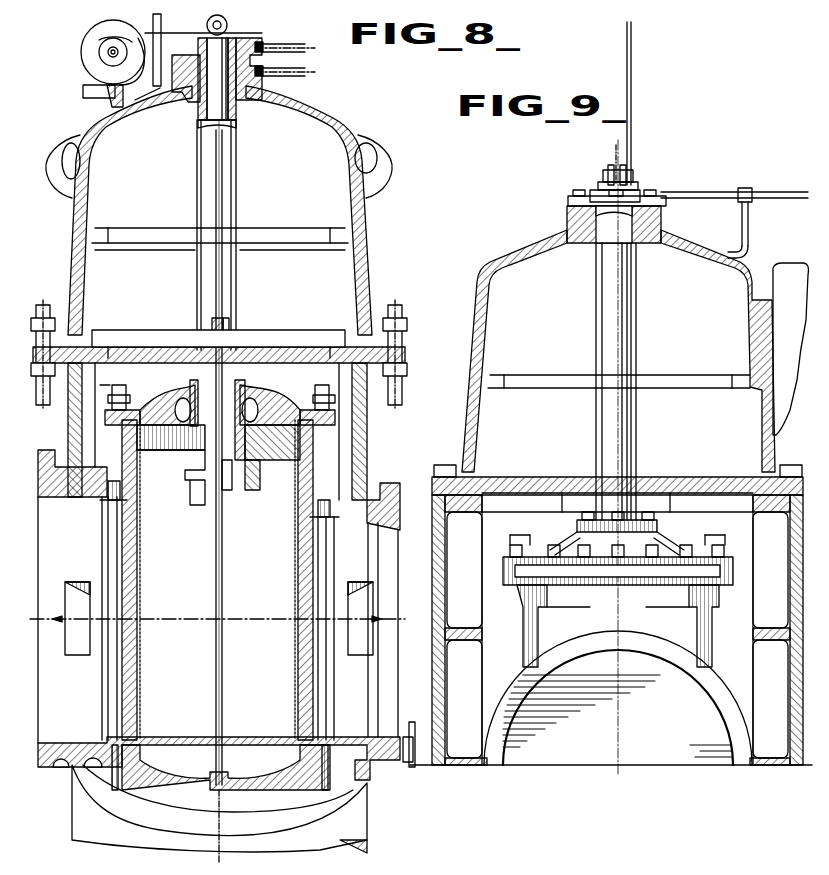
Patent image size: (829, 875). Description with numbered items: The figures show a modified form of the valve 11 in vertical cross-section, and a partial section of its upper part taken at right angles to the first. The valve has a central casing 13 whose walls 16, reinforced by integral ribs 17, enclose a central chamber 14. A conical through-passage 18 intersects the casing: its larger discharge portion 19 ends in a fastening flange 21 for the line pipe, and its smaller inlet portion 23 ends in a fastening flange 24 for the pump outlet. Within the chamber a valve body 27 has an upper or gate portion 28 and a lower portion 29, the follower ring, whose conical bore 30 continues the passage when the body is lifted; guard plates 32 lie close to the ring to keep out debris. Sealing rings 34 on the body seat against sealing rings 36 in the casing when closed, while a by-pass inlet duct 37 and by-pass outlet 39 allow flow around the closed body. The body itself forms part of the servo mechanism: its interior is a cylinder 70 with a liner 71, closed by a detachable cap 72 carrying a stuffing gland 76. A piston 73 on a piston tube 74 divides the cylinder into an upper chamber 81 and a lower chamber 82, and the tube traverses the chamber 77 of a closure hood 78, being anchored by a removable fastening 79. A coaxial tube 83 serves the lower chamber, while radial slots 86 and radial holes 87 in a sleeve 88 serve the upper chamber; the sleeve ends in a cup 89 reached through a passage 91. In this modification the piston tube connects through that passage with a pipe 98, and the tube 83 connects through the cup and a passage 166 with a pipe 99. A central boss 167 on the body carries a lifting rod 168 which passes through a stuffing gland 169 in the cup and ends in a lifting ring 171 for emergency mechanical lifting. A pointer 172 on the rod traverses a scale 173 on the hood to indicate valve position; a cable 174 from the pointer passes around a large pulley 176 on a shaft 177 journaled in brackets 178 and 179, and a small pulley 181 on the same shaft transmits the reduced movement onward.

In FIG. 8, the valve 11 is at (372, 437).
In FIG. 9, the valve 11 is at (768, 772).
In FIG. 8, the central casing 13 is at (368, 415).
In FIG. 9, the central casing 13 is at (455, 768).
In FIG. 8, the central chamber 14 is at (290, 375).
In FIG. 9, the central chamber 14 is at (530, 485).
In FIG. 8, the walls 16 is at (368, 458).
In FIG. 9, the walls 16 is at (452, 692).
In FIG. 8, the integral ribs 17 is at (368, 398).
In FIG. 9, the integral ribs 17 is at (470, 607).
In FIG. 8, the conical through-passage 18 is at (385, 532).
In FIG. 8, the discharge portion 19 is at (74, 713).
In FIG. 8, the fastening flange 21 is at (45, 450).
In FIG. 8, the inlet portion 23 is at (395, 730).
In FIG. 8, the fastening flange 24 is at (392, 760).
In FIG. 8, the valve body 27 is at (138, 670).
In FIG. 9, the valve body 27 is at (725, 622).
In FIG. 8, the upper portion 28 is at (125, 545).
In FIG. 9, the upper portion 28 is at (572, 770).
In FIG. 8, the lower portion 29 is at (168, 795).
In FIG. 8, the conical bore 30 is at (262, 798).
In FIG. 8, the guard plates 32 is at (115, 790).
In FIG. 8, the circular sealing rings 34 is at (138, 497).
In FIG. 9, the circular sealing rings 34 is at (495, 770).
In FIG. 8, the sealing rings 36 is at (110, 500).
In FIG. 8, the by-pass inlet duct 37 is at (358, 655).
In FIG. 8, the by-pass outlet 39 is at (70, 655).
In FIG. 8, the circular cylinder 70 is at (140, 535).
In FIG. 8, the liner 71 is at (140, 582).
In FIG. 8, the detachable cap 72 is at (135, 410).
In FIG. 9, the detachable cap 72 is at (735, 565).
In FIG. 8, the piston 73 is at (278, 460).
In FIG. 8, the piston tube 74 is at (238, 196).
In FIG. 9, the piston tube 74 is at (638, 412).
In FIG. 8, the stuffing gland 76 is at (195, 380).
In FIG. 9, the stuffing gland 76 is at (660, 528).
In FIG. 8, the chamber 77 is at (342, 260).
In FIG. 9, the chamber 77 is at (696, 356).
In FIG. 8, the closure hood 78 is at (362, 230).
In FIG. 9, the closure hood 78 is at (760, 268).
In FIG. 8, the removable fastening 79 is at (200, 100).
In FIG. 9, the removable fastening 79 is at (598, 240).
In FIG. 8, the upper chamber 81 is at (282, 408).
In FIG. 8, the lower chamber 82 is at (255, 588).
In FIG. 8, the tube 83 is at (232, 480).
In FIG. 8, the radial slots 86 is at (178, 408).
In FIG. 8, the radial holes 87 is at (212, 410).
In FIG. 8, the sleeve 88 is at (232, 330).
In FIG. 8, the cup 89 is at (176, 96).
In FIG. 9, the cup 89 is at (568, 199).
In FIG. 8, the passage 91 is at (248, 98).
In FIG. 8, the pipe 98 is at (296, 73).
In FIG. 8, the pipe 99 is at (296, 49).
In FIG. 8, the passage 166 is at (262, 42).
In FIG. 8, the central boss 167 is at (225, 775).
In FIG. 8, the central lifting rod 168 is at (208, 128).
In FIG. 8, the stuffing gland 169 is at (226, 36).
In FIG. 9, the stuffing gland 169 is at (640, 190).
In FIG. 8, the lifting ring 171 is at (228, 25).
In FIG. 9, the lifting ring 171 is at (614, 160).
In FIG. 8, the pointer 172 is at (175, 30).
In FIG. 8, the scale 173 is at (153, 25).
In FIG. 9, the scale 173 is at (633, 48).
In FIG. 8, the cable 174 is at (150, 100).
In FIG. 8, the large pulley 176 is at (95, 45).
In FIG. 9, the large pulley 176 is at (604, 173).
In FIG. 8, the shaft 177 is at (108, 53).
In FIG. 9, the shaft 177 is at (708, 191).
In FIG. 8, the bracket 178 is at (83, 86).
In FIG. 9, the bracket 179 is at (750, 220).
In FIG. 8, the small pulley 181 is at (105, 62).